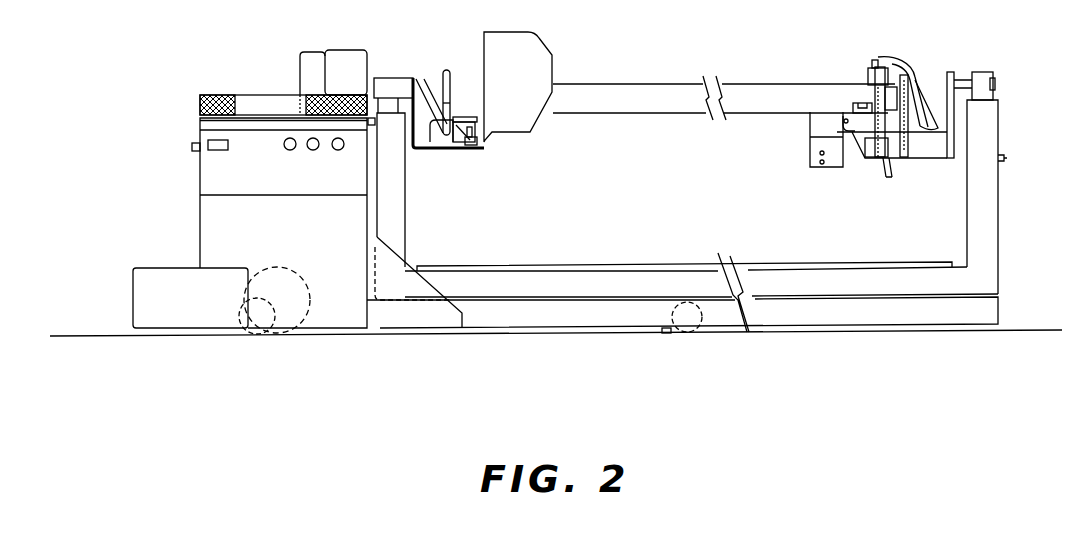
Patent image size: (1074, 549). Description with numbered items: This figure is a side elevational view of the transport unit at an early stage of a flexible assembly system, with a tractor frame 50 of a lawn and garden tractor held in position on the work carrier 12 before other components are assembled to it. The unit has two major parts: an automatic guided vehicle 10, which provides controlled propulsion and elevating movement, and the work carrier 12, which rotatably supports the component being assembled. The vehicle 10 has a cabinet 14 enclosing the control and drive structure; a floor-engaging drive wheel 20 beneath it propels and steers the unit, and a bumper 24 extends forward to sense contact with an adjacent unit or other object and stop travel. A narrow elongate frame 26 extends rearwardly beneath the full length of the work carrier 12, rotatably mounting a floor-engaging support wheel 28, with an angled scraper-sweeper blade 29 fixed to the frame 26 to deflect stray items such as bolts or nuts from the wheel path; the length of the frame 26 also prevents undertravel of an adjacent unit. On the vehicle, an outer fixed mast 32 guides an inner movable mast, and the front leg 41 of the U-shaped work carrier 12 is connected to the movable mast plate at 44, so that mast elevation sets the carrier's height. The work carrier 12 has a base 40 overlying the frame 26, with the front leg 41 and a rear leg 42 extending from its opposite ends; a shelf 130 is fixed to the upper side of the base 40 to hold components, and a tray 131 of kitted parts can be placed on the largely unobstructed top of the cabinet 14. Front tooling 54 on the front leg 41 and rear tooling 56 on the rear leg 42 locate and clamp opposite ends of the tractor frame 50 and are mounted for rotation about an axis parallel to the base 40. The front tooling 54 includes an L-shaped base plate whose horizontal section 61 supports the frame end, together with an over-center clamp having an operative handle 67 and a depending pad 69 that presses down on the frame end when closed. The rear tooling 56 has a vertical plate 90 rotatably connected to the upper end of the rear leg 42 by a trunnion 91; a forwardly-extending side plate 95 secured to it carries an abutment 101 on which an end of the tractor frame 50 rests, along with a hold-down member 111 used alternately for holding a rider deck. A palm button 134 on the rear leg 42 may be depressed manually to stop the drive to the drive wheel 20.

The automatic guided vehicle 10 is at (178, 166).
The work carrier 12 is at (1003, 60).
The cabinet 14 is at (200, 206).
The drive wheel 20 is at (280, 333).
The bumper 24 is at (152, 268).
The frame 26 is at (795, 322).
The support wheel 28 is at (690, 333).
The scraper-sweeper blade 29 is at (665, 333).
The outer fixed mast 32 is at (361, 83).
The base 40 is at (617, 272).
The front leg 41 is at (405, 210).
The rear leg 42 is at (998, 212).
The connection 44 is at (367, 137).
The tractor frame 50 is at (762, 80).
The front tooling 54 is at (405, 85).
The rear tooling 56 is at (917, 40).
The horizontal section 61 is at (444, 148).
The handle 67 is at (447, 70).
The depending pad 69 is at (476, 148).
The vertical plate 90 is at (950, 152).
The trunnion 91 is at (995, 73).
The side plate 95 is at (915, 158).
The abutment 101 is at (858, 100).
The hold-down member 111 is at (870, 68).
The shelf 130 is at (513, 266).
The tray 131 is at (205, 95).
The palm button 134 is at (1008, 158).